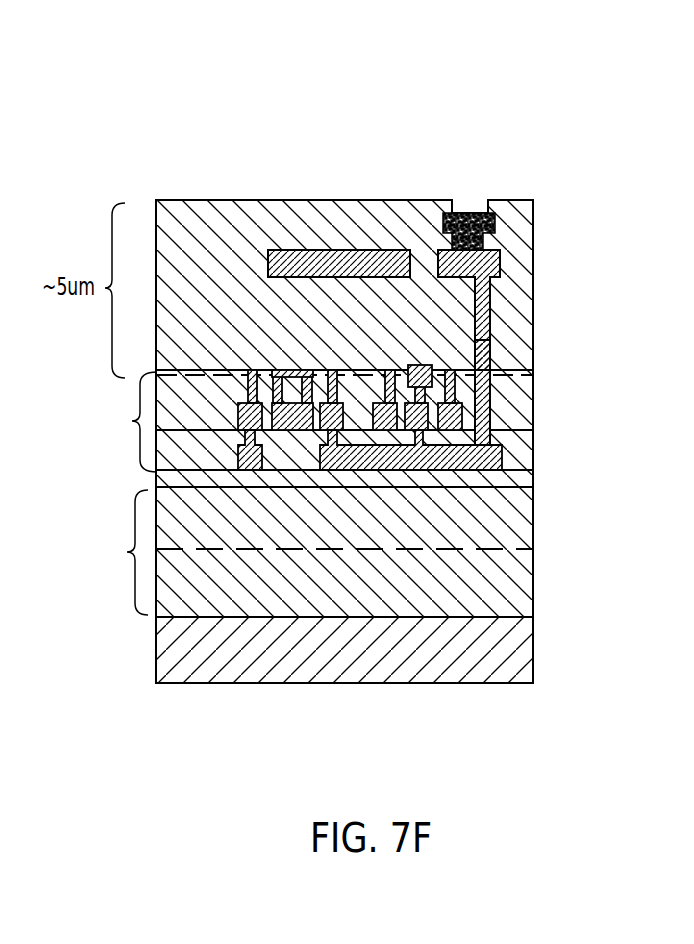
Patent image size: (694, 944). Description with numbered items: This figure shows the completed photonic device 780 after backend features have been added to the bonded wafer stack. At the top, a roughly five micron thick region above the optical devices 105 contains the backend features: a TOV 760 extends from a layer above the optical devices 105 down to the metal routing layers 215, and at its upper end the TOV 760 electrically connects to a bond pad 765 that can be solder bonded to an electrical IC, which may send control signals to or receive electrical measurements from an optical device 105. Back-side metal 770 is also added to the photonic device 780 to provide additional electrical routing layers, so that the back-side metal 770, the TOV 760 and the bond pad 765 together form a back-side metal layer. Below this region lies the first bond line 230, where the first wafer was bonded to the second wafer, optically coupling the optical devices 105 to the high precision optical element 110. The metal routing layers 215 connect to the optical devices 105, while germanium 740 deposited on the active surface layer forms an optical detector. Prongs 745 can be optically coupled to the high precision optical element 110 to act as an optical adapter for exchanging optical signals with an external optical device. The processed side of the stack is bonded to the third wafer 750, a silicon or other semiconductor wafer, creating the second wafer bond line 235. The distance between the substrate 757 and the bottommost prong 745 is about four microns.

The photonic device 780 is at (191, 144).
The back-side metal 770 is at (333, 249).
The bond pad 765 is at (476, 210).
The TOV 760 is at (504, 314).
The germanium 740 is at (472, 352).
The optical device 105 is at (292, 371).
The high precision optical element 110 is at (200, 375).
The metal routing layers 215 is at (306, 421).
The first bond line 230 is at (520, 377).
The prongs 745 is at (513, 487).
The second wafer bond line 235 is at (158, 586).
The third wafer 750 is at (132, 683).
The substrate 757 is at (580, 657).